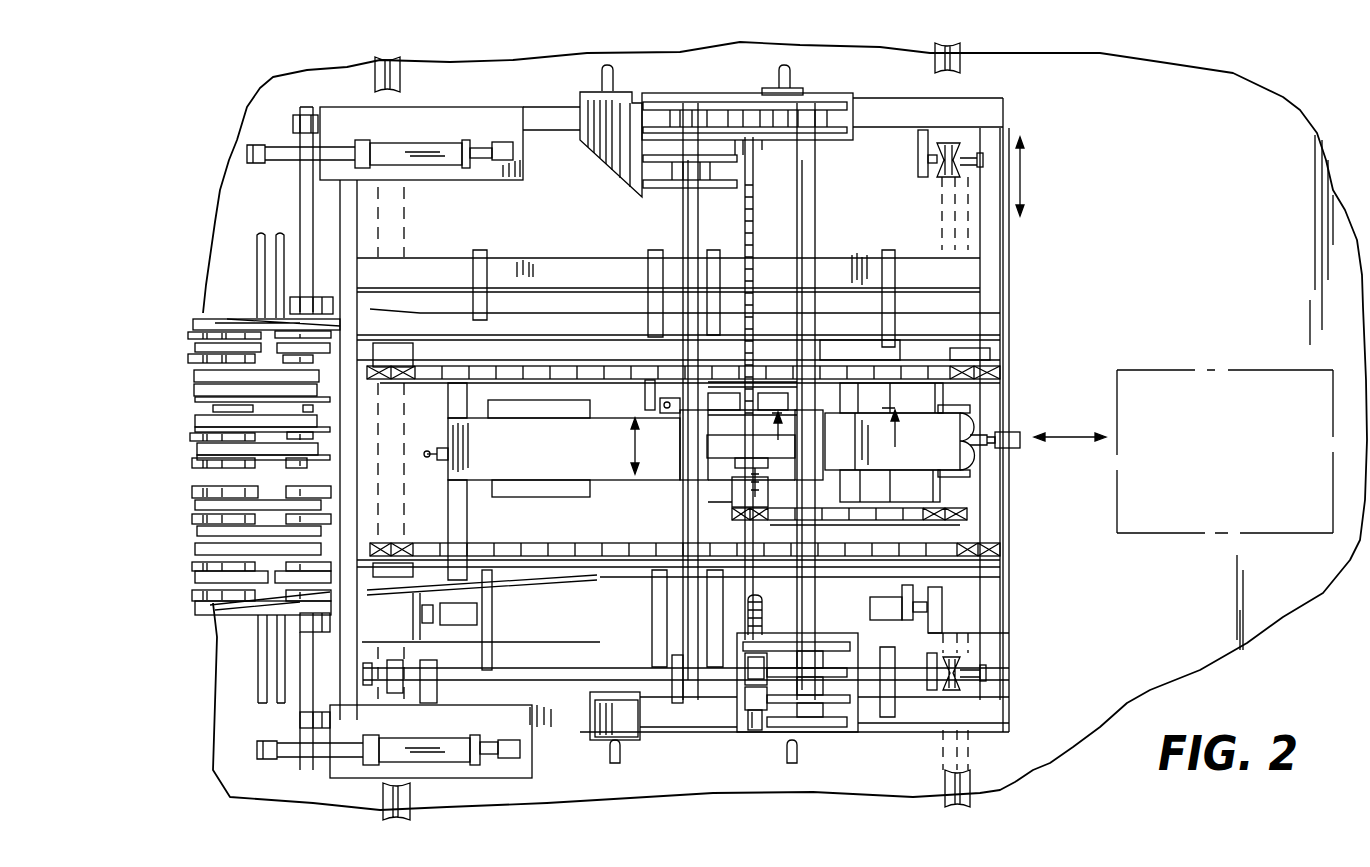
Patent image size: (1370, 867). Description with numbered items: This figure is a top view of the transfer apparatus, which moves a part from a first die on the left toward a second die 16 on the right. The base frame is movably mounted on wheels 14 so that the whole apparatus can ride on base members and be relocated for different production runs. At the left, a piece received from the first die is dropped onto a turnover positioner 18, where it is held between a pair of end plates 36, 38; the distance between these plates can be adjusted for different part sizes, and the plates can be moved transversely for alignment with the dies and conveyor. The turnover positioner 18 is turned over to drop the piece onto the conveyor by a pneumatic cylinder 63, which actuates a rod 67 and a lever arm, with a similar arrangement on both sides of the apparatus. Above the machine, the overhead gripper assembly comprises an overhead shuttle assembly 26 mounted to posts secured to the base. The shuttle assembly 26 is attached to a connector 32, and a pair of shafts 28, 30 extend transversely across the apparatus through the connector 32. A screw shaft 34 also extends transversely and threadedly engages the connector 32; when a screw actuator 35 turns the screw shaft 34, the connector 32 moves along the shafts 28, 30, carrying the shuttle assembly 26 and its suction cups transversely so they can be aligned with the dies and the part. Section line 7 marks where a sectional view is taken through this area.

The section line 7- 7 is at (844, 437).
The wheel 14 is at (1007, 651).
The second die 16 is at (1251, 367).
The turnover positioner 18 is at (207, 616).
The overhead shuttle assembly 26 is at (480, 486).
The shaft 28 is at (688, 220).
The shaft 30 is at (807, 213).
The connector 32 is at (713, 443).
The screw shaft 34 is at (752, 205).
The screw actuator 35 is at (757, 725).
The end plate 36 is at (237, 318).
The end plate 38 is at (250, 618).
The pneumatic cylinder 63 is at (462, 762).
The rod 67 is at (344, 752).